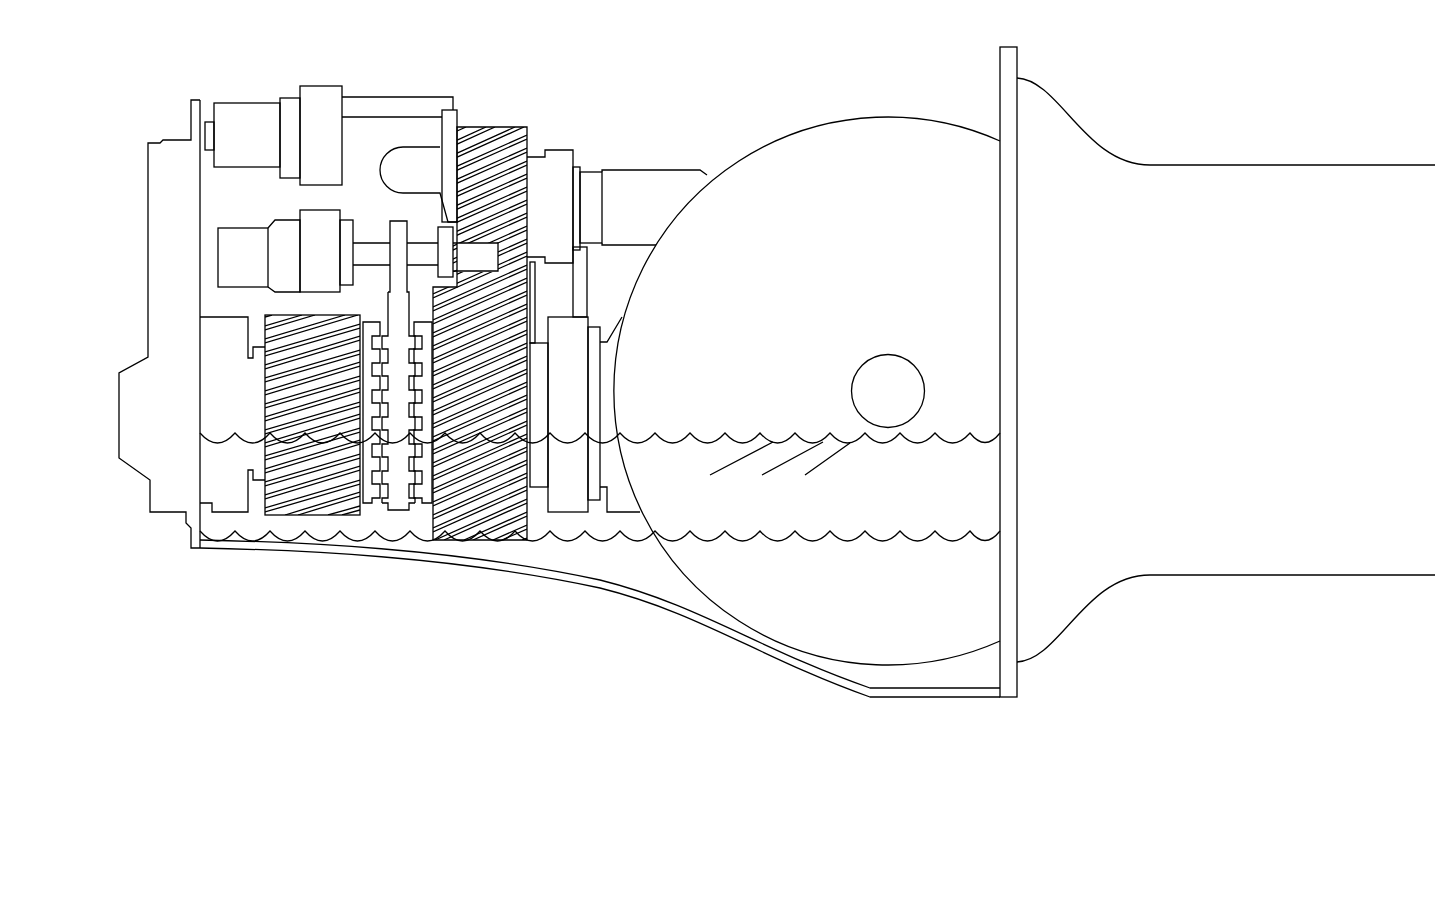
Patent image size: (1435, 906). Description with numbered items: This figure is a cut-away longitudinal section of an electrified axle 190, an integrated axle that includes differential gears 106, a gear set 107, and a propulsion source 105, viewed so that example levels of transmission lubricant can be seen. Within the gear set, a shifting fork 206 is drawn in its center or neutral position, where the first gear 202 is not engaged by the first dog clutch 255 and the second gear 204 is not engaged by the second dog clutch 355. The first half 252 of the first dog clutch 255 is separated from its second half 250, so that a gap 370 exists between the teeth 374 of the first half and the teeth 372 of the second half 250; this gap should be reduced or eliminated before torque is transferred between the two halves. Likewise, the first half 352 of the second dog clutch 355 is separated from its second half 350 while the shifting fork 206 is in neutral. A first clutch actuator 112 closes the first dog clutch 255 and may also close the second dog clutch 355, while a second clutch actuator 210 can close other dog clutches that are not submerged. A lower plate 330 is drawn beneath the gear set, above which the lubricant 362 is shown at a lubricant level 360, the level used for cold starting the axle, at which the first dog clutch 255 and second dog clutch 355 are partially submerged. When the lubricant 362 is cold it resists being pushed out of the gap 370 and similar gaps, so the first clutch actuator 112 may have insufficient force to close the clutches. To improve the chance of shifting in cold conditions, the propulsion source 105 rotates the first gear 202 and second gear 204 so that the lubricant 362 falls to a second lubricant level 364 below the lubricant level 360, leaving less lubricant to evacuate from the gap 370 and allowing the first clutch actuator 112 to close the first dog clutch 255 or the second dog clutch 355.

The electrified axle 190 is at (392, 38).
The second clutch actuator 210 is at (250, 137).
The first clutch actuator 112 is at (228, 245).
The gear set 107 is at (244, 562).
The propulsion source 105 is at (1073, 98).
The differential gears 106 is at (685, 578).
The first gear 202 is at (285, 503).
The second gear 204 is at (523, 523).
The shifting fork 206 is at (393, 510).
The second half of first dog clutch 250 is at (371, 446).
The first half of first dog clutch 252 is at (382, 507).
The first dog clutch 255 is at (373, 518).
The second half of second dog clutch 350 is at (430, 497).
The first half of second dog clutch 352 is at (410, 507).
The second dog clutch 355 is at (422, 518).
The gap 370 is at (333, 453).
The teeth of second half of first dog clutch 372 is at (373, 322).
The teeth of first half of first dog clutch 374 is at (387, 322).
The baffle plate 330 is at (605, 582).
The lubricant level 360 is at (600, 474).
The lubricant 362 is at (832, 458).
The second lubricant level 364 is at (847, 541).